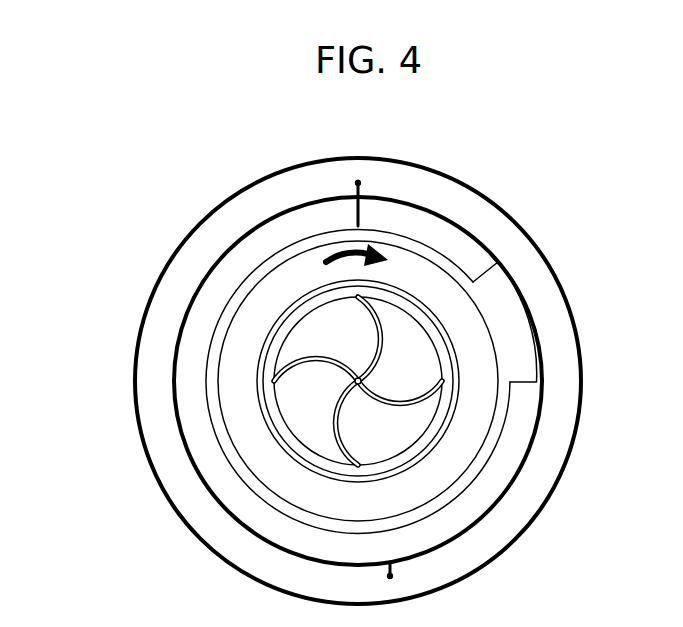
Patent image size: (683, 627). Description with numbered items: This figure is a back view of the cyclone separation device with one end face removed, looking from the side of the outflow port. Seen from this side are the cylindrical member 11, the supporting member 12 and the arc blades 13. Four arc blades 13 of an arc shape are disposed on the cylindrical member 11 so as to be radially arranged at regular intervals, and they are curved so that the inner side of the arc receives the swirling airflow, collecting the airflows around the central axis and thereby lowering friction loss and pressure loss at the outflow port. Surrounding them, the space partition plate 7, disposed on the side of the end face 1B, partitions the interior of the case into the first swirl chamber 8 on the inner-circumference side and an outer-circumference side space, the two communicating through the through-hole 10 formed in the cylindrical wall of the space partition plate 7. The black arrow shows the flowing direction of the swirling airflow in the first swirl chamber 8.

The end face 1B is at (425, 287).
The space partition plate 7 is at (523, 397).
The first swirl chamber 8 is at (233, 300).
The through-hole 10 is at (510, 320).
The cylindrical member 11 is at (400, 439).
The supporting member 12 is at (357, 380).
The arc blades 13 is at (402, 396).